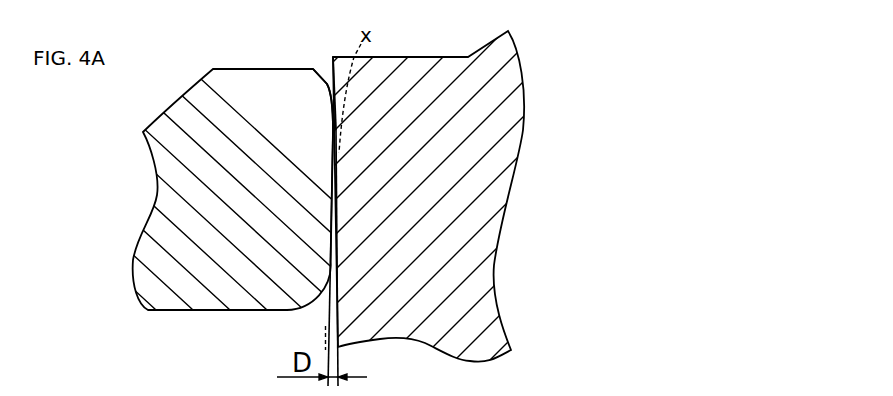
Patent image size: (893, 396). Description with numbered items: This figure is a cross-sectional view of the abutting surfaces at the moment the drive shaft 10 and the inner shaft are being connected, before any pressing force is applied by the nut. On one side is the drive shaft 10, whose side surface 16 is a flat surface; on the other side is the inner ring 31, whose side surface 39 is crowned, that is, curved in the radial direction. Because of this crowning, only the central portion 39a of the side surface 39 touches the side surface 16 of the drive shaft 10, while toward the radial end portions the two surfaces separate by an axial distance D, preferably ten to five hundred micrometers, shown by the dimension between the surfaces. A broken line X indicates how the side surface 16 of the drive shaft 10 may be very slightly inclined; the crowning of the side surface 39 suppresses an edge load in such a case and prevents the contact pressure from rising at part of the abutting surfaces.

The drive shaft 10 is at (400, 55).
The inner ring 31 is at (247, 69).
The side surface 39 is at (327, 83).
The side surface 16 is at (333, 55).
The central portion 39a is at (338, 187).